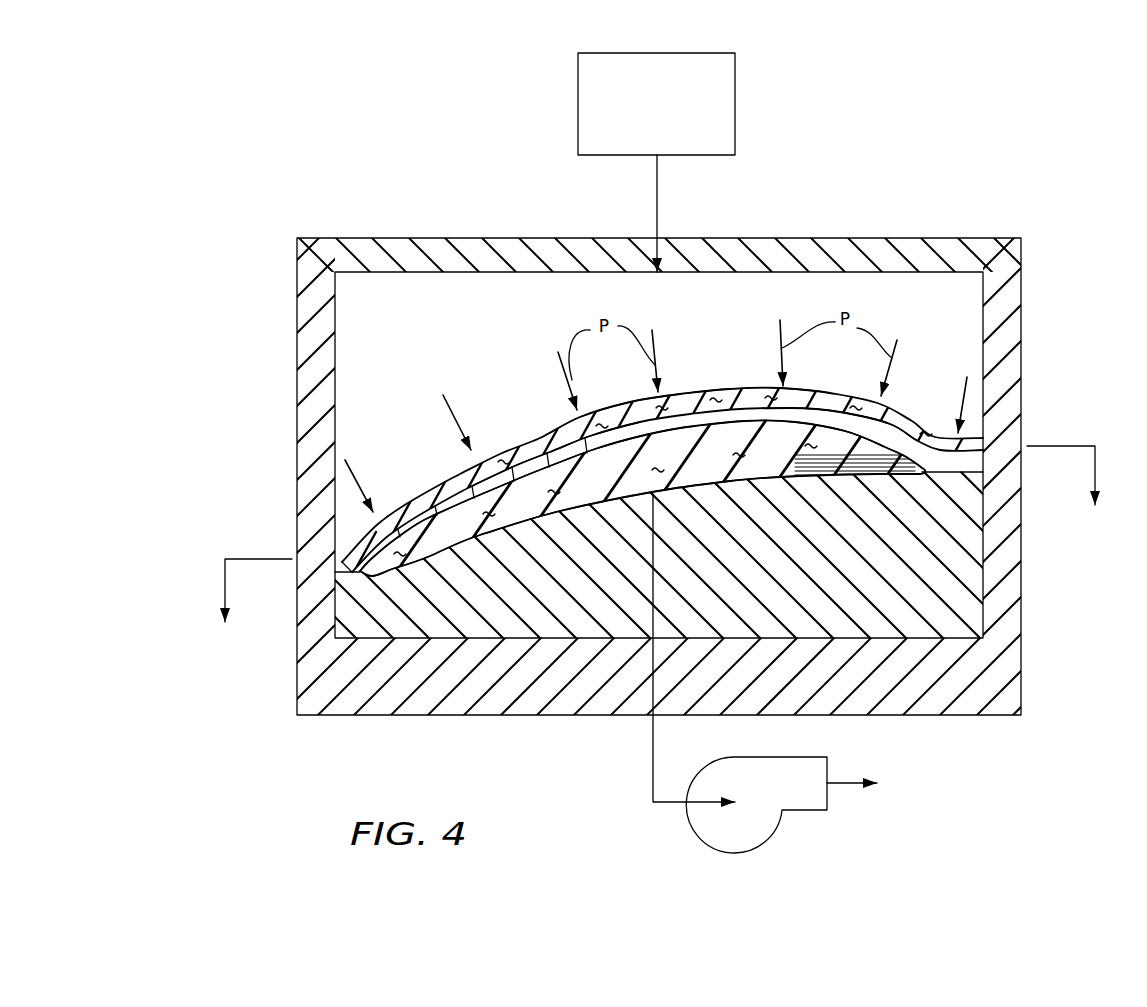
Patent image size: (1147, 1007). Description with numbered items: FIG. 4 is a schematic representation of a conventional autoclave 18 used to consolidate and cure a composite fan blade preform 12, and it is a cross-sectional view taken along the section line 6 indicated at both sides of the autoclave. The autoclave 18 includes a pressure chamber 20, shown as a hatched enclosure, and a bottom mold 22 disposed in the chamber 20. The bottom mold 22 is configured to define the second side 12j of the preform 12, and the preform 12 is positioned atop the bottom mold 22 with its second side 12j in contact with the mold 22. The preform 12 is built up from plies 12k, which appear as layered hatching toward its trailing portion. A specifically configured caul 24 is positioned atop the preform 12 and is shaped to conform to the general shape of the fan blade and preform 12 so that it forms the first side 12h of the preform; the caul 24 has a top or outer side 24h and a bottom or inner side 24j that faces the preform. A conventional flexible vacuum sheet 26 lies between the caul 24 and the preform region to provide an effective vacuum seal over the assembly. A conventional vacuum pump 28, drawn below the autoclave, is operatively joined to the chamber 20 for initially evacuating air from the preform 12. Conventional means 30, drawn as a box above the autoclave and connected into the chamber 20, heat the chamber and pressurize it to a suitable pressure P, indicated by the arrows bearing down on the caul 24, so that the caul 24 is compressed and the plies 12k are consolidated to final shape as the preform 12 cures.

The section line 6- 6 is at (655, 534).
The preform 12 is at (478, 494).
The first side of preform 12h is at (505, 470).
The second side of preform 12j is at (527, 516).
The preform plies 12k is at (883, 497).
The autoclave 18 is at (1053, 257).
The pressure chamber 20 is at (337, 343).
The bottom mold 22 is at (759, 555).
The caul 24 is at (712, 408).
The top or outer side of caul 24h is at (742, 385).
The bottom or inner side of caul 24j is at (838, 436).
The flexible vacuum sheet 26 is at (551, 444).
The vacuum pump 28 is at (765, 846).
The heating and pressurizing means 30 is at (668, 107).